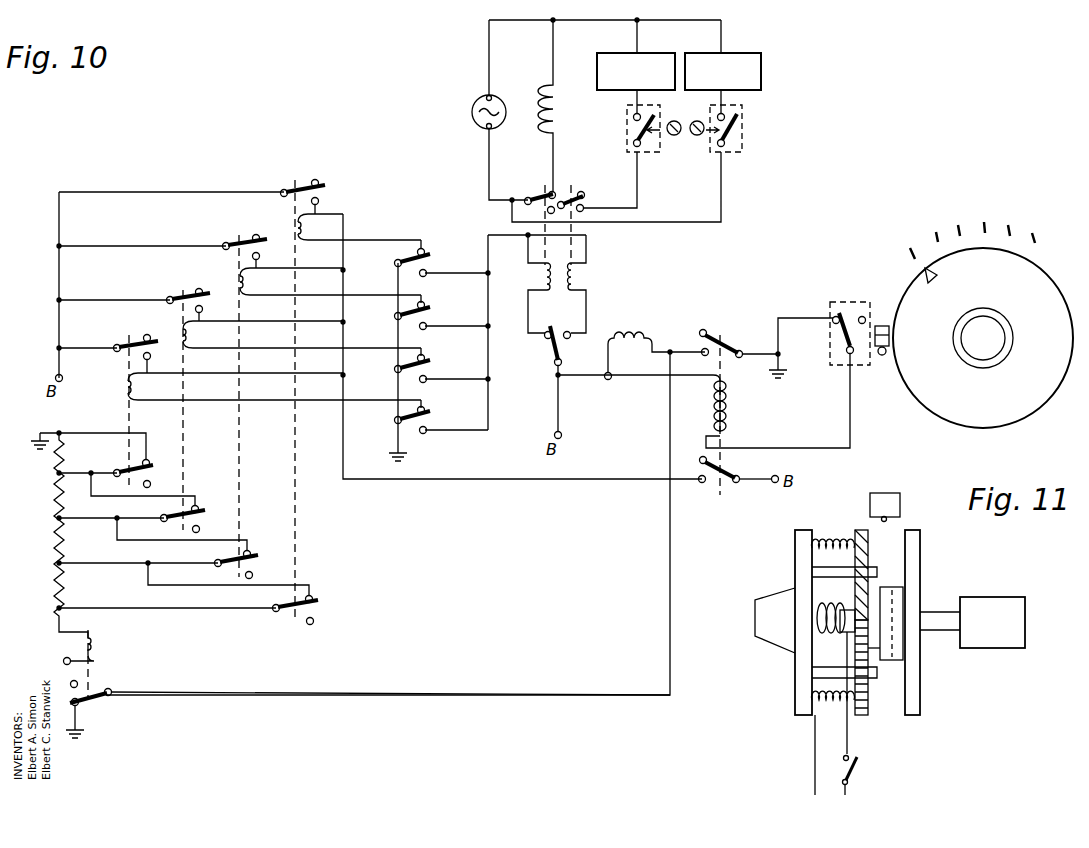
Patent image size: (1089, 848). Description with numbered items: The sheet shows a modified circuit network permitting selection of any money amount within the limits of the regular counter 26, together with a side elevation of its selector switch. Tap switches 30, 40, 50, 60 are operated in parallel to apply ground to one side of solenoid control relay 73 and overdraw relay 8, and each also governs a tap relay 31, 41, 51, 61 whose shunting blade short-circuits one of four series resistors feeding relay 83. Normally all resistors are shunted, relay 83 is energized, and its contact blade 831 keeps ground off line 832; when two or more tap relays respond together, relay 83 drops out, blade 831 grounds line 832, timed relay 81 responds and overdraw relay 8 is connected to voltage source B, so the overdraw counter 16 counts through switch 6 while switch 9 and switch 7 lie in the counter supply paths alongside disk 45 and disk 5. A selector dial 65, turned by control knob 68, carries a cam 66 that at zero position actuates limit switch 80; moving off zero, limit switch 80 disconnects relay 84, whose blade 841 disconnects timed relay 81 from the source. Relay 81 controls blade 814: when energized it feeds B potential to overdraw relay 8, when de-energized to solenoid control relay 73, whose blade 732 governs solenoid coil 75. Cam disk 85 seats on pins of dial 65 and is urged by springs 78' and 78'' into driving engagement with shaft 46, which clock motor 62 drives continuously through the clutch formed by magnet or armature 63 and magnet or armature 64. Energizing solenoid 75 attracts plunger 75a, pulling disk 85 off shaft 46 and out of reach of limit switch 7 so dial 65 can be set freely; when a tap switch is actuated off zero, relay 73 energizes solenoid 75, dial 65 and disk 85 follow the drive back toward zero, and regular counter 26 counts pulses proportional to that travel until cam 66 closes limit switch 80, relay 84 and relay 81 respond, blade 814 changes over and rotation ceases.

In FIG. 10, the disk 5 is at (672, 136).
In FIG. 11, the disk 5 is at (921, 556).
In FIG. 10, the limit switch 6 is at (640, 128).
In FIG. 10, the limit switch 7 is at (740, 132).
In FIG. 11, the limit switch 7 is at (890, 493).
In FIG. 10, the overdraw relay 8 is at (578, 280).
In FIG. 10, the switch 9 is at (586, 193).
In FIG. 10, the overdraw counter 16 is at (665, 42).
In FIG. 10, the regular counter 26 is at (752, 53).
In FIG. 10, the tap switch 30 is at (428, 258).
In FIG. 10, the tap relay 31 is at (303, 228).
In FIG. 10, the tap switch 40 is at (428, 311).
In FIG. 10, the tap relay 41 is at (246, 282).
In FIG. 10, the disk 45 is at (697, 136).
In FIG. 11, the shaft 46 is at (935, 610).
In FIG. 10, the tap switch 50 is at (428, 364).
In FIG. 10, the tap relay 51 is at (189, 335).
In FIG. 10, the tap switch 60 is at (428, 415).
In FIG. 10, the tap relay 61 is at (134, 387).
In FIG. 11, the clock motor 62 is at (1001, 631).
In FIG. 11, the magnet or armature 63 is at (872, 595).
In FIG. 11, the magnet or armature 64 is at (893, 660).
In FIG. 10, the selector dial 65 is at (1025, 398).
In FIG. 11, the selector dial 65 is at (803, 702).
In FIG. 10, the cam 66 is at (878, 330).
In FIG. 10, the control knob 68 is at (991, 348).
In FIG. 11, the control knob 68 is at (765, 626).
In FIG. 10, the solenoid control relay 73 is at (540, 278).
In FIG. 10, the solenoid coil 75 is at (545, 100).
In FIG. 11, the solenoid coil 75 is at (820, 602).
In FIG. 11, the plunger 75a is at (840, 636).
In FIG. 11, the spring 78' is at (833, 523).
In FIG. 11, the spring 78'' is at (807, 721).
In FIG. 10, the limit switch 80 is at (840, 340).
In FIG. 10, the timed relay 81 is at (646, 320).
In FIG. 10, the relay 83 is at (93, 645).
In FIG. 10, the relay 84 is at (727, 408).
In FIG. 11, the cam disk 85 is at (860, 715).
In FIG. 10, the blade 814 is at (552, 352).
In FIG. 10, the contact blade 831 is at (96, 698).
In FIG. 10, the line 832 is at (222, 696).
In FIG. 10, the blade 841 is at (708, 328).
In FIG. 10, the blade 732 is at (542, 195).
In FIG. 11, the blade 732 is at (856, 770).